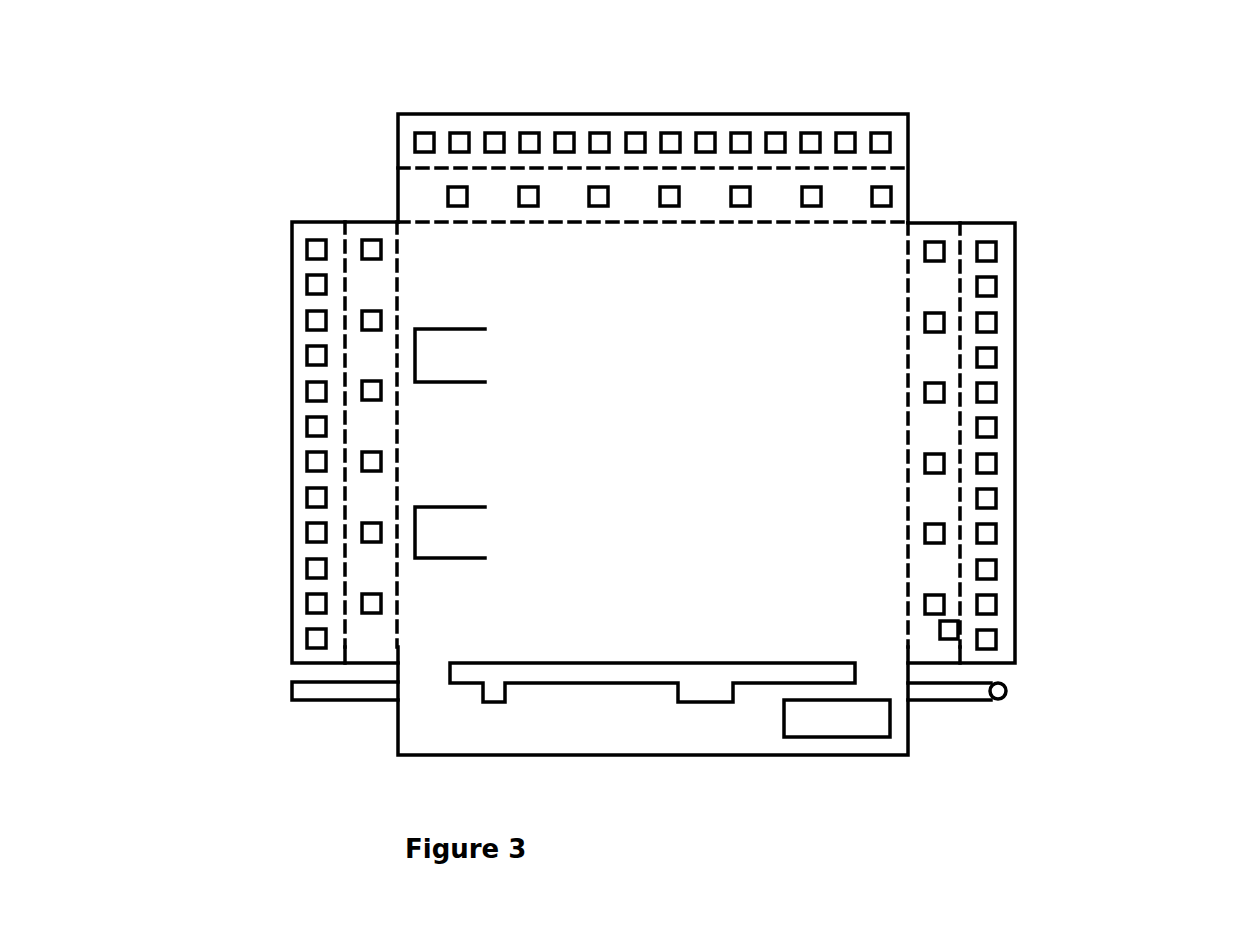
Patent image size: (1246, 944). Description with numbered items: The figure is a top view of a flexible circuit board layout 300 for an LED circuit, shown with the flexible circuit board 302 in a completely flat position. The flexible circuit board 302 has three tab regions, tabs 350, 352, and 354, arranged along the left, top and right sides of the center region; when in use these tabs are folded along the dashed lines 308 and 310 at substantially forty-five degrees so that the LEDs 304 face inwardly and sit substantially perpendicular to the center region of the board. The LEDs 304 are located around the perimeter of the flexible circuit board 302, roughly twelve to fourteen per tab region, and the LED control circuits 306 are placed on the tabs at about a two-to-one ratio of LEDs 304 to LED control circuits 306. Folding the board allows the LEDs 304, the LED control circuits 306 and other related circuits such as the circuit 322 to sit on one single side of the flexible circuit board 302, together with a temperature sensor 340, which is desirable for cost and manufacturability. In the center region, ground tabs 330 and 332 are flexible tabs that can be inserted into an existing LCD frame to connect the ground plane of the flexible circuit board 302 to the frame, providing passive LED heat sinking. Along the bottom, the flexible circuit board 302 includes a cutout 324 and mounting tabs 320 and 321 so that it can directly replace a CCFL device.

The flexible circuit board layout 300 is at (1183, 118).
The flexible circuit board 302 is at (653, 741).
The LEDs 304 is at (648, 342).
The LED control circuits 306 is at (666, 371).
The dashed line 308 is at (654, 368).
The dashed line 310 is at (654, 397).
The mounting tab 320 is at (1022, 665).
The mounting tab 321 is at (276, 673).
The circuit 322 is at (876, 757).
The cutout 324 is at (652, 749).
The ground tab 330 is at (508, 337).
The ground tab 332 is at (504, 514).
The temperature sensor 340 is at (1038, 602).
The tab 350 is at (276, 442).
The tab 352 is at (653, 144).
The tab 354 is at (1022, 443).